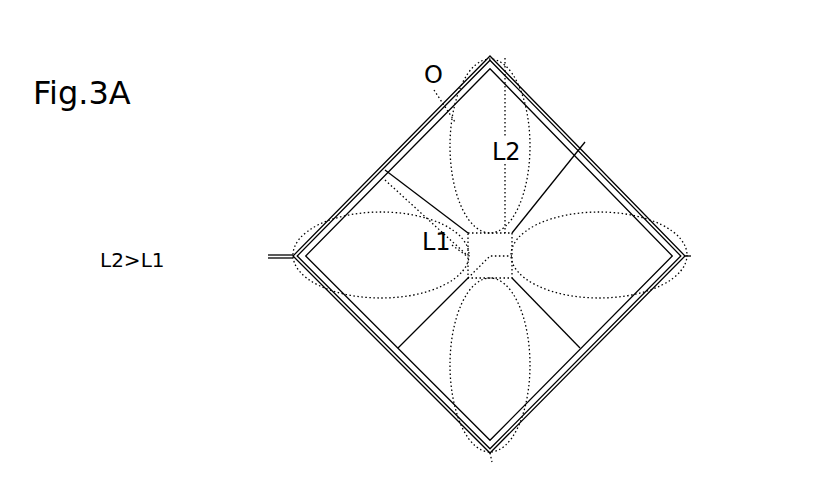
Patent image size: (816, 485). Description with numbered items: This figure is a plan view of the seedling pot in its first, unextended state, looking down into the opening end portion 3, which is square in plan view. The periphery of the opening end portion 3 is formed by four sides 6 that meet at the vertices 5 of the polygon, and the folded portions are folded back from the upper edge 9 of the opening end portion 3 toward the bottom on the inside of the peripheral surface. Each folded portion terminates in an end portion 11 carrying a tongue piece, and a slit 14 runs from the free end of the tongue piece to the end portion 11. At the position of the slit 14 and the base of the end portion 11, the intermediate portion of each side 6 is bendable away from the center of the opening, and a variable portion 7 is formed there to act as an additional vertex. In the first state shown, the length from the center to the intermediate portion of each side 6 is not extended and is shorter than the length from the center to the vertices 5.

The opening end portion 3 is at (527, 90).
The vertices 5 is at (490, 56).
The sides 6 is at (487, 258).
The variable portion 7 is at (383, 170).
The upper edge 9 is at (487, 258).
The end portion 11 is at (601, 198).
The slit 14 is at (420, 178).